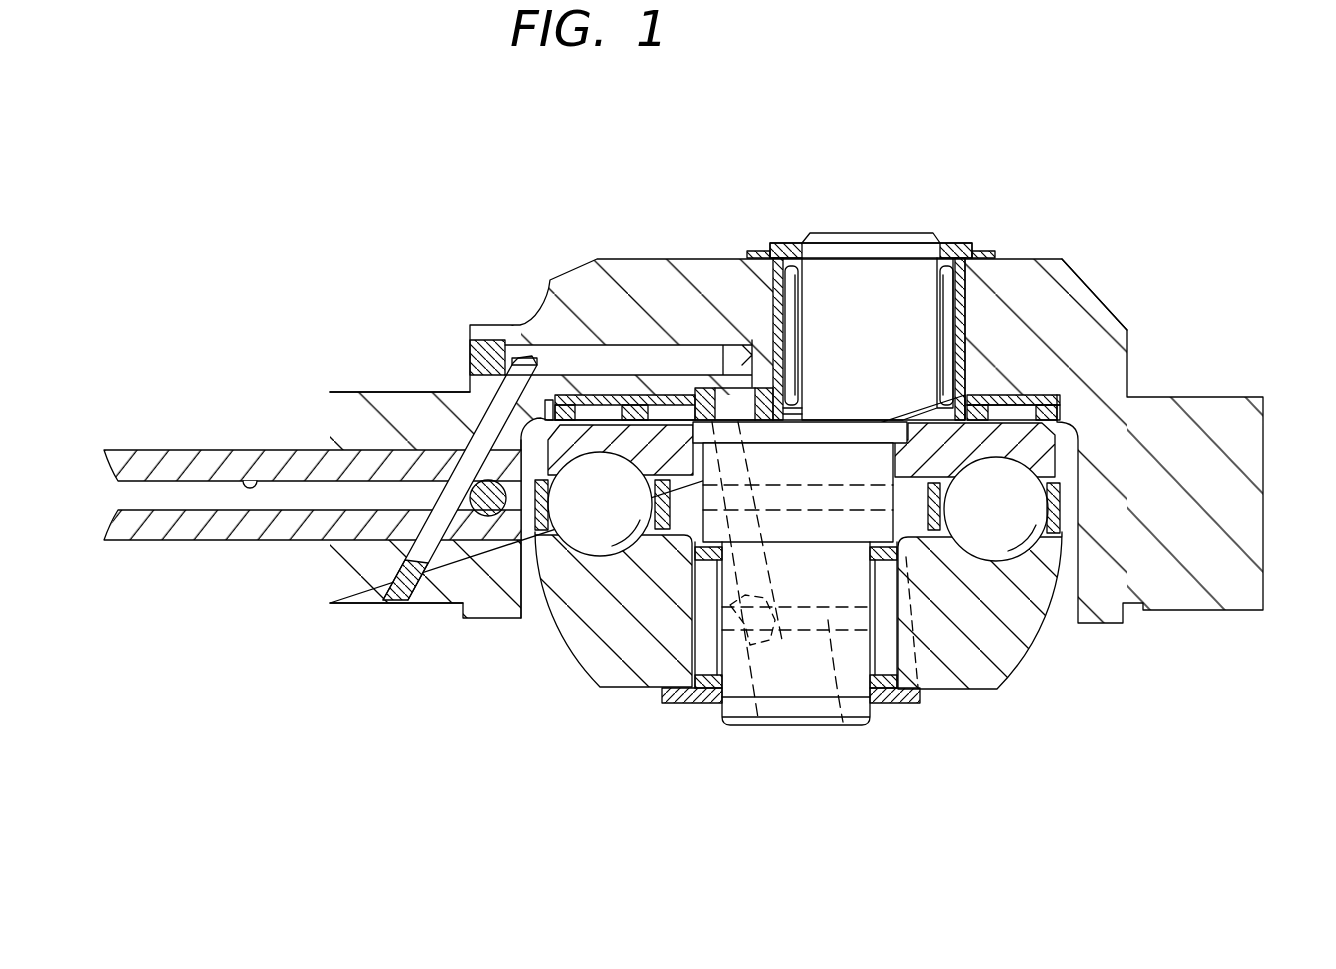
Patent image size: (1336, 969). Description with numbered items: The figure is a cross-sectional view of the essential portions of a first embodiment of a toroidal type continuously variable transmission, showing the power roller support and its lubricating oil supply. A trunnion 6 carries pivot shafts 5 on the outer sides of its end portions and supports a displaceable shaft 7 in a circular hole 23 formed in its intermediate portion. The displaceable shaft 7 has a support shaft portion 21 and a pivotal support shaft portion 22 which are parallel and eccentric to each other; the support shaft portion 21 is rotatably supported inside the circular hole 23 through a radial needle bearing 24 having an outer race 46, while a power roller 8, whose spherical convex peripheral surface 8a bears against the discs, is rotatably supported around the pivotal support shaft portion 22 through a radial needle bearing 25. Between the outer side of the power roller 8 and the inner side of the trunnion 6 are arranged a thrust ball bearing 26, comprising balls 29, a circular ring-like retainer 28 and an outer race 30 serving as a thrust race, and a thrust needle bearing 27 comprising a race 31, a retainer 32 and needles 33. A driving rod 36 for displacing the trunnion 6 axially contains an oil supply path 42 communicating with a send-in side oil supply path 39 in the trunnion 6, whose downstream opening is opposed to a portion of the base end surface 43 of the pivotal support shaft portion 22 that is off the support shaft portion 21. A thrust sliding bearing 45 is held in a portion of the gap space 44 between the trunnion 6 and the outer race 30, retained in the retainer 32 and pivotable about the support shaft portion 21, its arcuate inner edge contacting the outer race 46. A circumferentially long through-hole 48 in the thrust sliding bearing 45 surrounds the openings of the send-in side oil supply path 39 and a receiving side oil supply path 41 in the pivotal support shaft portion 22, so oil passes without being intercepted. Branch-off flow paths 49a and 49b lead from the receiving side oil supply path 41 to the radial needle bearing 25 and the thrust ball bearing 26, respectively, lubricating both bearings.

The pivot shaft 5 is at (348, 392).
The trunnion 6 is at (1104, 376).
The displaceable shaft 7 is at (848, 455).
The power roller 8 is at (972, 672).
The peripheral surface 8a is at (550, 612).
The support shaft portion 21 is at (898, 268).
The pivotal support shaft portion 22 is at (800, 690).
The circular hole 23 is at (778, 256).
The radial needle bearing 24 is at (946, 283).
The radial needle bearing 25 is at (708, 608).
The thrust ball bearing 26 is at (588, 560).
The thrust needle bearing 27 is at (678, 403).
The retainer 28 is at (1062, 510).
The ball 29 is at (608, 560).
The outer race 30 is at (476, 350).
The race 31 is at (528, 358).
The retainer 32 is at (1050, 405).
The needle 33 is at (590, 395).
The driving rod 36 is at (184, 450).
The send-in side oil supply path 39 is at (549, 345).
The receiving side oil supply path 41 is at (757, 718).
The oil supply path 42 is at (252, 480).
The base end surface 43 is at (790, 410).
The gap space 44 is at (1040, 335).
The thrust sliding bearing 45 is at (745, 400).
The outer race 46 is at (963, 313).
The through-hole 48 is at (715, 395).
The branch-off flow path 49a is at (825, 632).
The branch-off flow path 49b is at (900, 575).